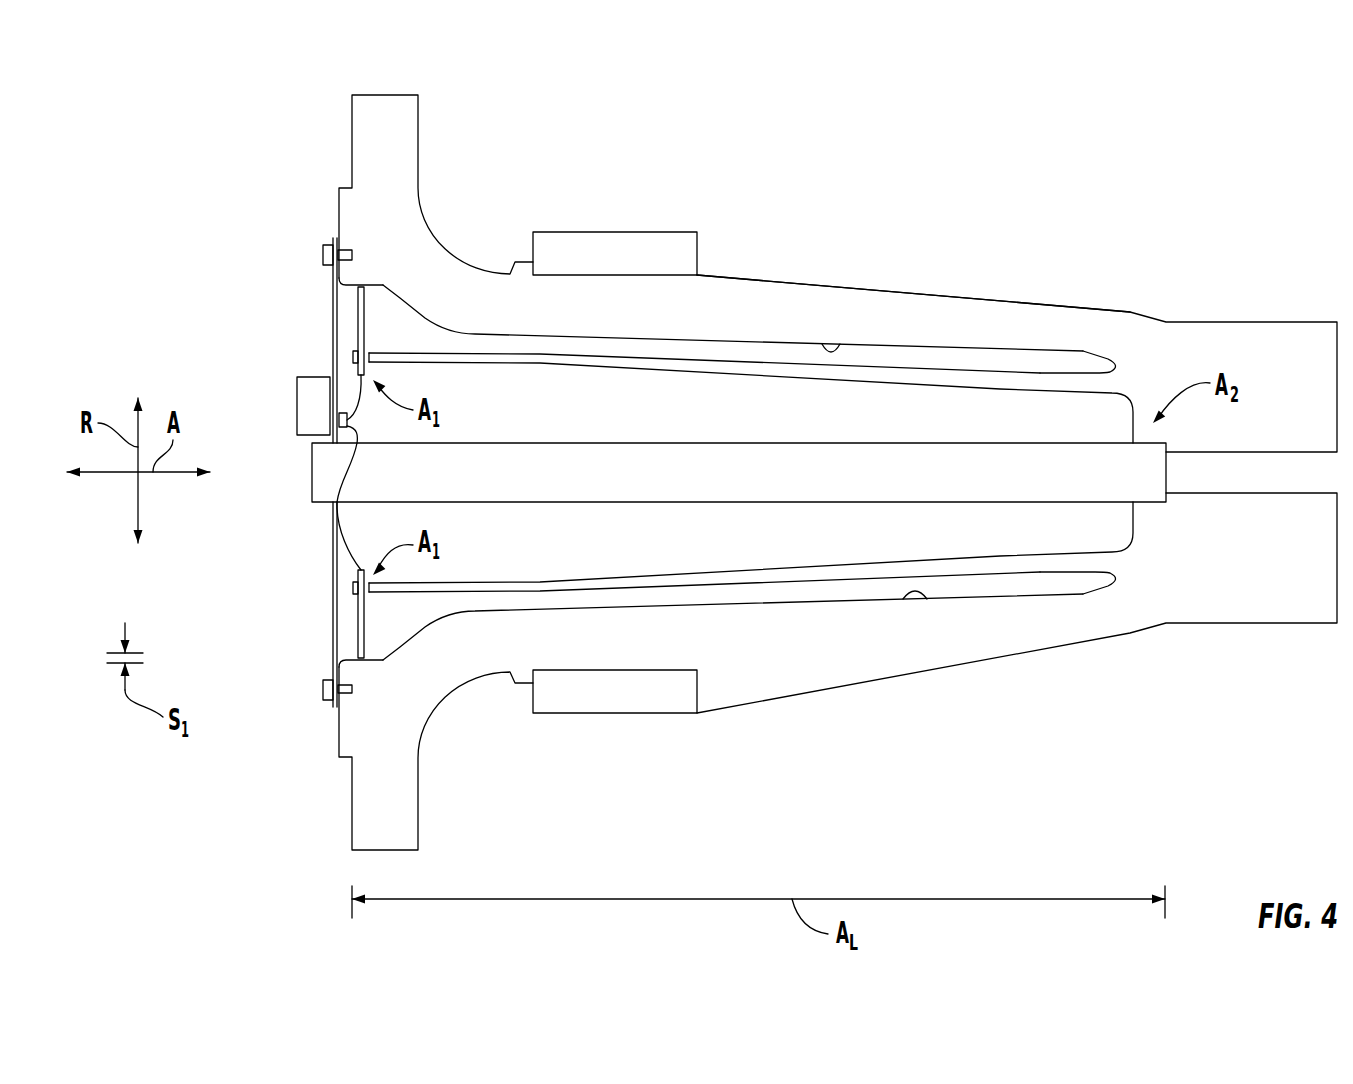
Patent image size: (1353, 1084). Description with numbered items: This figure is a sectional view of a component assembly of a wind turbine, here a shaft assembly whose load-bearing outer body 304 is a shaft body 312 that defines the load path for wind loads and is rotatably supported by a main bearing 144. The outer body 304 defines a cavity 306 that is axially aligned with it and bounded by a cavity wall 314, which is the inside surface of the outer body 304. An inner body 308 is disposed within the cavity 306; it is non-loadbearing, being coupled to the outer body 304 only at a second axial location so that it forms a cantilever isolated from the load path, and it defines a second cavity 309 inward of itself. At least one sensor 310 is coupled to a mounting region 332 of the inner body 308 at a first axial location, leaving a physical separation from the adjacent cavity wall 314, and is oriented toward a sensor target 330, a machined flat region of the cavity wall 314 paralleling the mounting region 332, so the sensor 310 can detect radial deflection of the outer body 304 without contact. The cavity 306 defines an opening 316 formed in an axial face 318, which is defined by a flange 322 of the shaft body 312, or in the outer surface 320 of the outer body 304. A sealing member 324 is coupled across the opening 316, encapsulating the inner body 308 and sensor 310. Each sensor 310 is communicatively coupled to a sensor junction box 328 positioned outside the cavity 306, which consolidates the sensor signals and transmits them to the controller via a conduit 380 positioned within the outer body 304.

The main bearing 144 is at (632, 706).
The outer body 304 is at (912, 307).
The cavity 306 is at (1122, 411).
The inner body 308 is at (782, 370).
The second cavity 309 is at (590, 419).
The sensor 310 is at (358, 323).
The shaft body 312 is at (912, 307).
The cavity wall 314 is at (841, 346).
The opening 316 is at (280, 569).
The axial face 318 is at (337, 722).
The outer surface 320 is at (768, 279).
The flange 322 is at (388, 113).
The sealing member 324 is at (333, 305).
The sensor junction box 328 is at (313, 383).
The sensor target 330 is at (366, 276).
The mounting region 332 is at (379, 346).
The conduit 380 is at (430, 487).